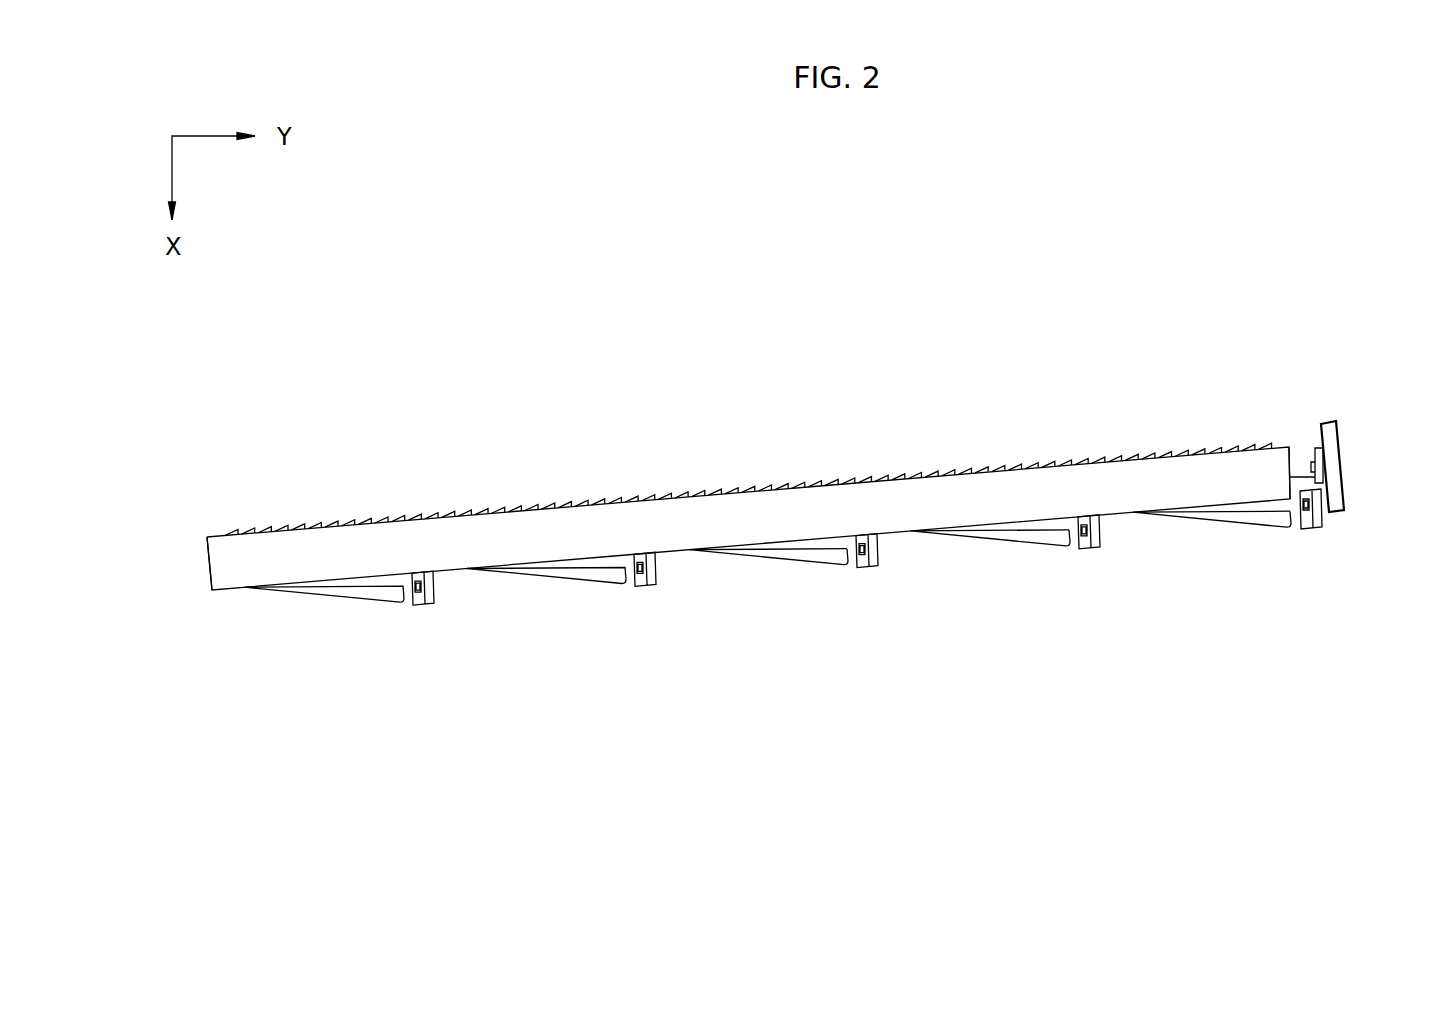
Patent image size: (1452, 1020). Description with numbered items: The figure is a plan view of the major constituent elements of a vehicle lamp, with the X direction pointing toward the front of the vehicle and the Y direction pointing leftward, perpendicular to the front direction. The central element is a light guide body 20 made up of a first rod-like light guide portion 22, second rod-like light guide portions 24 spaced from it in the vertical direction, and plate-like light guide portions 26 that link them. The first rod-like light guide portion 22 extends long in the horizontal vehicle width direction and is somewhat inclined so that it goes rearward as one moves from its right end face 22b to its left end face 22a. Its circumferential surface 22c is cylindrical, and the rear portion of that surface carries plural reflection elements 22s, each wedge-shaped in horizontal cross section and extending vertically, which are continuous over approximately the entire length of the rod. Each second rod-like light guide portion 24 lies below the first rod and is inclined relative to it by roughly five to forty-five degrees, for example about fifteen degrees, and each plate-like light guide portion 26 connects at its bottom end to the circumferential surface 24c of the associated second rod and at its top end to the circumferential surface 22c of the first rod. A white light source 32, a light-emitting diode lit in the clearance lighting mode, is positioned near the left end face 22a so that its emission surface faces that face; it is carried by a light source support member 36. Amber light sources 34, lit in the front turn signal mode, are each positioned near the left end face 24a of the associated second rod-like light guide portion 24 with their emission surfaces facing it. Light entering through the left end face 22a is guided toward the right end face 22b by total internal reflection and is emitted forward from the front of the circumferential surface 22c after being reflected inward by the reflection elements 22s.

The light guide body 20 is at (505, 437).
The first rod-like light guide portion 22 is at (995, 487).
The left end face 22a is at (1340, 477).
The right end face 22b is at (208, 575).
The circumferential surface 22c is at (715, 511).
The reflection elements 22s is at (868, 478).
The second rod-like light guide portions 24 is at (1003, 537).
The left end face 24a is at (852, 558).
The circumferential surfaces 24c is at (787, 553).
The plate-like light guide portions 26 is at (1053, 527).
The light source 32 is at (1307, 453).
The light sources 34 is at (1075, 555).
The light source support member 36 is at (1332, 440).